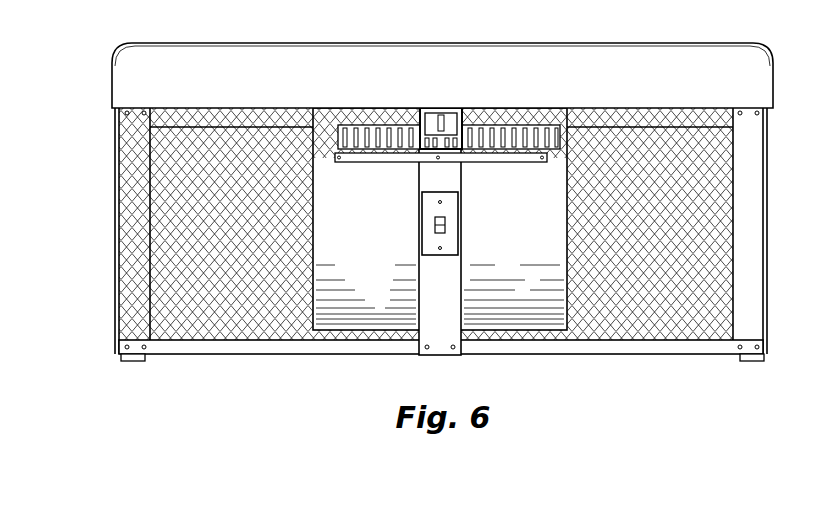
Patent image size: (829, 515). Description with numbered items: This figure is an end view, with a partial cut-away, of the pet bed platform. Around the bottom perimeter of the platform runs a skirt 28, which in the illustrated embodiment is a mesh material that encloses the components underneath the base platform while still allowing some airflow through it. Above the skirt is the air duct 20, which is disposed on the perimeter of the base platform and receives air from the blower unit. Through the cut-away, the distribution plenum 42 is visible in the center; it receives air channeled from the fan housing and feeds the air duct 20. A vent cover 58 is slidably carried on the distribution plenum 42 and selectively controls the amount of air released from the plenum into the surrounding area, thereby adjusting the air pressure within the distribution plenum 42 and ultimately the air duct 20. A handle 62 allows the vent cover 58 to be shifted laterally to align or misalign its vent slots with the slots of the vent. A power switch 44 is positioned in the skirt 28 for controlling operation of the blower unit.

The air duct 20 is at (134, 82).
The skirt 28 is at (194, 210).
The distribution plenum 42 is at (541, 313).
The power switch 44 is at (431, 213).
The vent cover 58 is at (488, 160).
The handle 62 is at (451, 120).